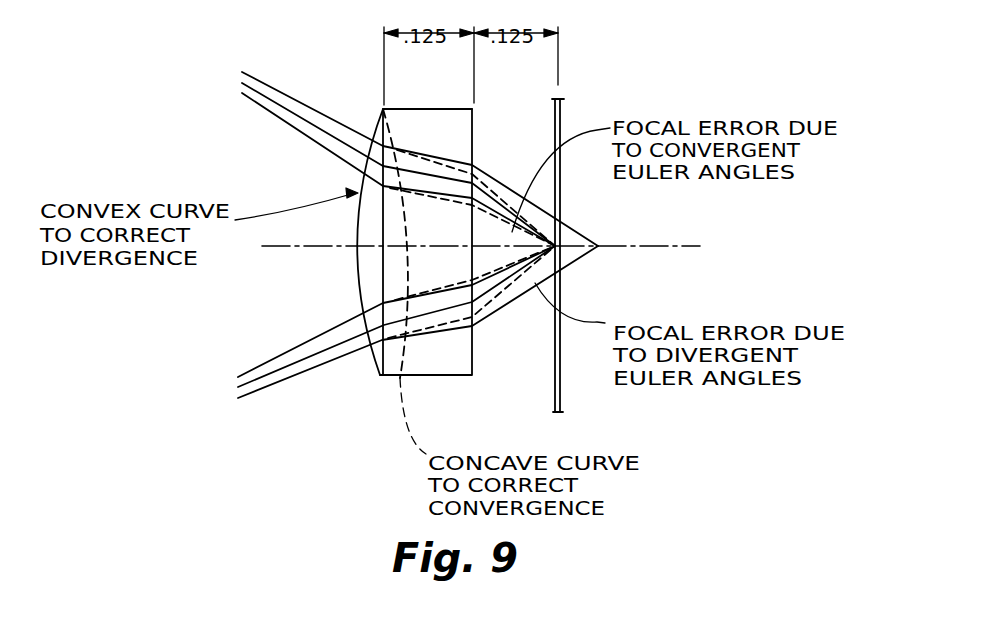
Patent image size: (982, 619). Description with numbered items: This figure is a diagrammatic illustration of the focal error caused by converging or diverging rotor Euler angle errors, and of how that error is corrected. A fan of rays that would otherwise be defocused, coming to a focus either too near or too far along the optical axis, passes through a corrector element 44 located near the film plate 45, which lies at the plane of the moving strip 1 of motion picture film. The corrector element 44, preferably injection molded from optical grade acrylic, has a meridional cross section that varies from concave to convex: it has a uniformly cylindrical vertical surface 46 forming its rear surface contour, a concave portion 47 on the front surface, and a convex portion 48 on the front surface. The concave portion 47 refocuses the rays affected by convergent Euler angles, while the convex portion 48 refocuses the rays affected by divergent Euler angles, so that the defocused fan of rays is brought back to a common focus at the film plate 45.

The moving strip of motion picture film 1 is at (565, 102).
The corrector element 44 is at (378, 111).
The film plate 45 is at (554, 346).
The uniformly cylindrical vertical surface 46 is at (473, 137).
The concave portion 47 is at (390, 343).
The convex portion 48 is at (353, 253).